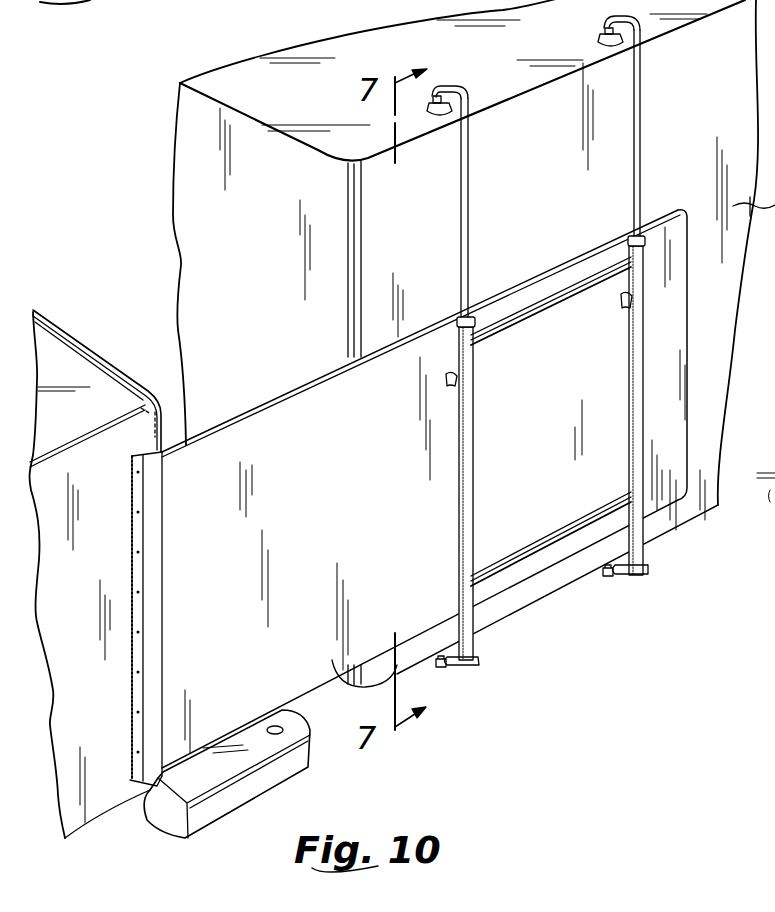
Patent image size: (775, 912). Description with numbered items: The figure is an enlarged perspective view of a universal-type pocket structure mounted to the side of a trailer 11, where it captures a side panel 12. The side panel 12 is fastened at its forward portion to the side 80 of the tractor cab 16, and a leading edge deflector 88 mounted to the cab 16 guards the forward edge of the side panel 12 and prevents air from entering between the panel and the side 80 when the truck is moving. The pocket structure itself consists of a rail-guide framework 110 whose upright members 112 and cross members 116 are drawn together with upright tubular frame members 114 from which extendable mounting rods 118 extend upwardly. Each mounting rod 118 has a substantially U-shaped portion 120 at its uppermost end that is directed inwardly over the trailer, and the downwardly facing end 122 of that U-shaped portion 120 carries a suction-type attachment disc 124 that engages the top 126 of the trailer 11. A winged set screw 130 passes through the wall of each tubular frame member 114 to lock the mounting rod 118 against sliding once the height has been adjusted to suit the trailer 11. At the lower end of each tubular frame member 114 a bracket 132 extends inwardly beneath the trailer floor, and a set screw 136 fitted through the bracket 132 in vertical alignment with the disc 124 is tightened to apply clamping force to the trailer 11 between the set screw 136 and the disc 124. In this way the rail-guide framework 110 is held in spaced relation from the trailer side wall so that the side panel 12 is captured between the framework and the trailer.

The trailer 11 is at (150, 170).
The side panel 12 is at (273, 414).
The tractor cab 16 is at (70, 348).
The side of the tractor cab 80 is at (95, 800).
The leading edge deflector 88 is at (152, 584).
The rail-guide framework 110 is at (645, 413).
The lower post 112 is at (463, 545).
The tubular frame member 114 is at (630, 357).
The horizontal rail 116 is at (520, 318).
The mounting rod 118 is at (461, 236).
The U-shaped portion 120 is at (462, 89).
The downwardly facing end 122 is at (436, 88).
The suction-type attachment disc 124 is at (437, 119).
The top of the trailer 126 is at (262, 67).
The winged set screw 130 is at (447, 379).
The bracket 132 is at (480, 664).
The set screw 136 is at (443, 665).